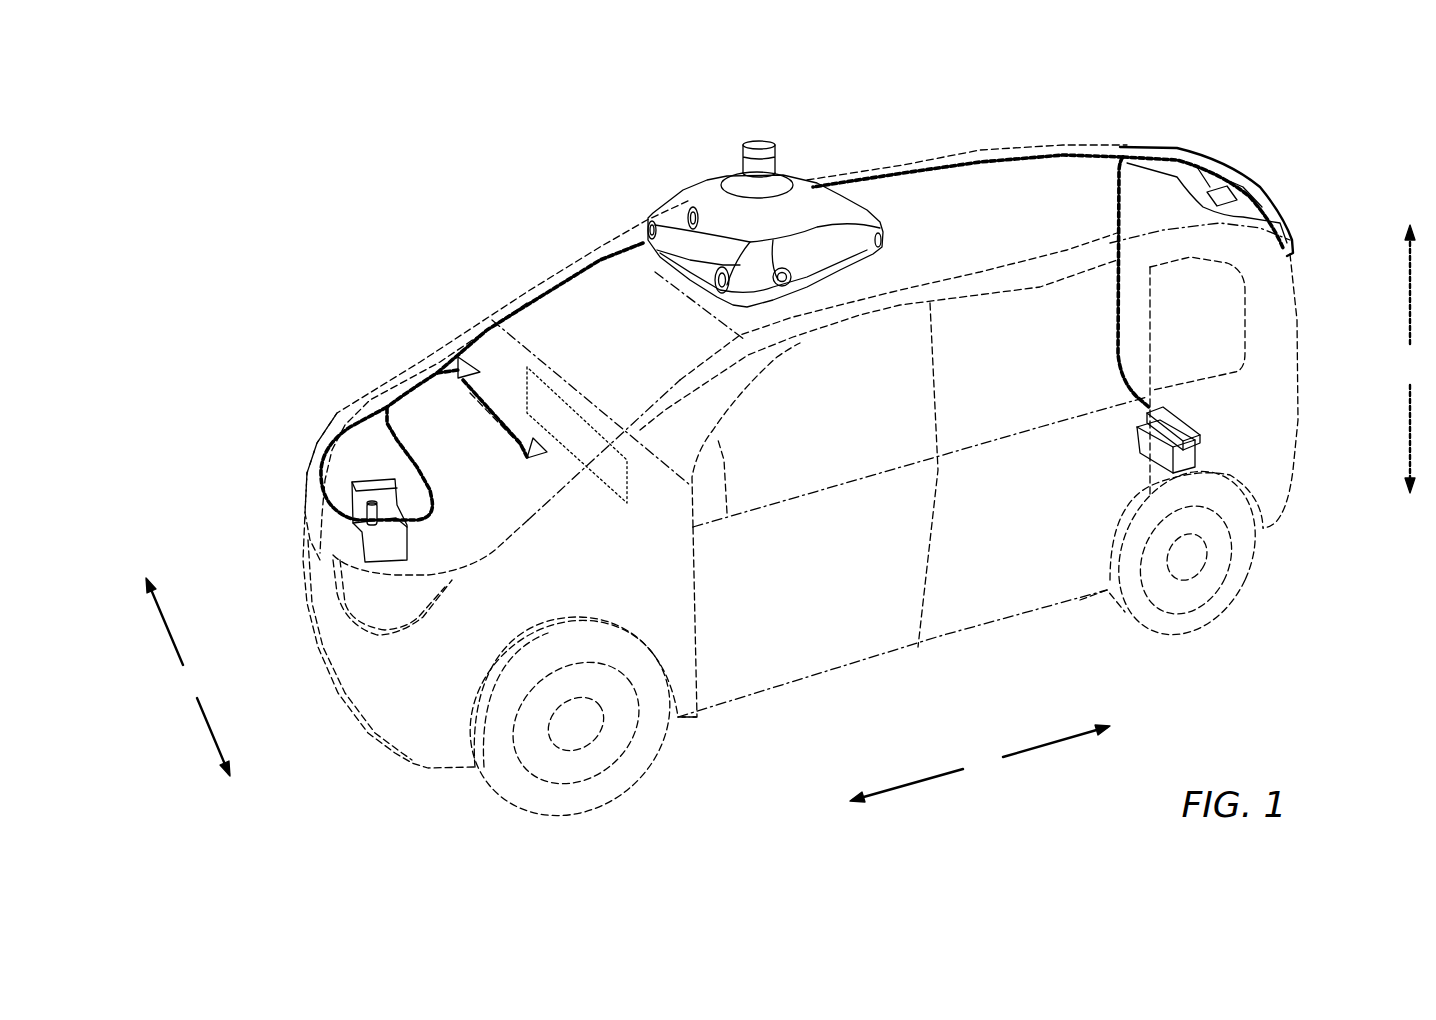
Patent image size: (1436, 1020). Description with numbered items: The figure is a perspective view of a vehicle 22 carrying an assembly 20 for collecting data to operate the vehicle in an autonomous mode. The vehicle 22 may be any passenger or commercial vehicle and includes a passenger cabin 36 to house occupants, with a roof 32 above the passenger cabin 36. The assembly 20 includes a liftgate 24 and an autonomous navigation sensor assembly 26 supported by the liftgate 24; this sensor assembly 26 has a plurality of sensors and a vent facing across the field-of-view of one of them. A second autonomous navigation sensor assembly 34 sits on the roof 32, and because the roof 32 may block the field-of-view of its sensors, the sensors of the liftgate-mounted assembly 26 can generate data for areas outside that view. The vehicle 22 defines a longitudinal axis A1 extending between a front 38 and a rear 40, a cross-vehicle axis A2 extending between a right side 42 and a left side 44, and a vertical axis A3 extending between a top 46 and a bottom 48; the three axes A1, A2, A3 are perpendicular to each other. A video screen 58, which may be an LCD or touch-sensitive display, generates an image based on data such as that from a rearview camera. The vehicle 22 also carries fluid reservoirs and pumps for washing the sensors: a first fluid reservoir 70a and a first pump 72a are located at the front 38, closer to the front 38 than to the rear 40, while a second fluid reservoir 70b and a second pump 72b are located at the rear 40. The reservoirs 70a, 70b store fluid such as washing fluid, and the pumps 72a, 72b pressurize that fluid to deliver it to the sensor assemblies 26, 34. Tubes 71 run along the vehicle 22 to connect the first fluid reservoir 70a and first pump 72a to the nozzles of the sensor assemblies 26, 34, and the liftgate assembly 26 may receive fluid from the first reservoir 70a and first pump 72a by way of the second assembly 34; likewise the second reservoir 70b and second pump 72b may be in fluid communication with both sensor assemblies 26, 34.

The assembly 20 is at (1178, 97).
The vehicle 22 is at (997, 148).
The liftgate 24 is at (1297, 322).
The autonomous navigation sensor assembly 26 is at (1237, 170).
The roof 32 is at (952, 226).
The second autonomous navigation sensor assembly 34 is at (700, 180).
The passenger cabin 36 is at (895, 408).
The front 38 is at (312, 453).
The rear 40 is at (1295, 488).
The right side 42 is at (417, 360).
The left side 44 is at (505, 545).
The top 46 is at (1072, 180).
The bottom 48 is at (966, 633).
The video screen 58 is at (567, 407).
The first fluid reservoir 70a is at (383, 548).
The second fluid reservoir 70b is at (1137, 437).
The tubes 71 is at (905, 175).
The first pump 72a is at (367, 520).
The second pump 72b is at (1190, 417).
The longitudinal axis A1 is at (980, 763).
The cross-vehicle axis A2 is at (188, 677).
The vertical axis A3 is at (1410, 359).